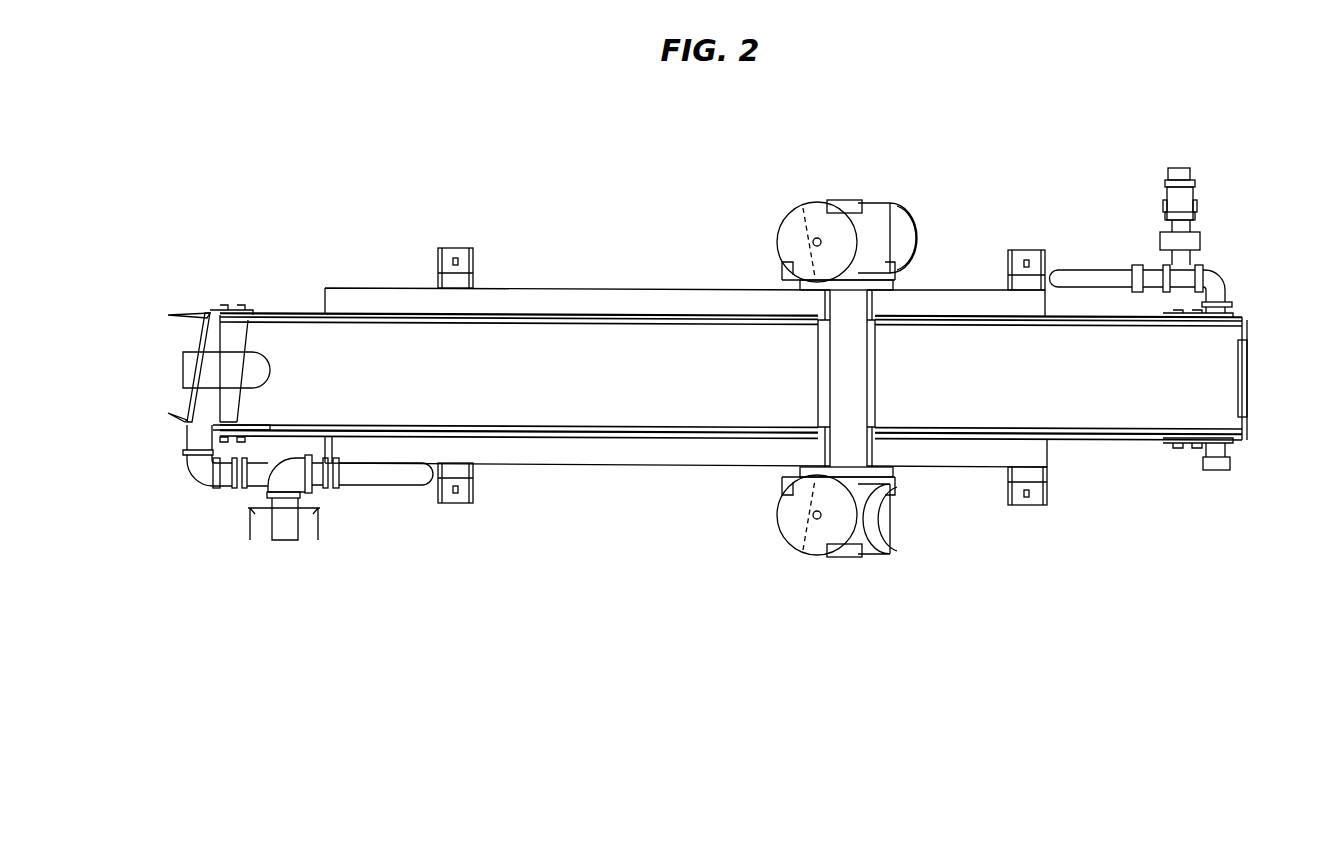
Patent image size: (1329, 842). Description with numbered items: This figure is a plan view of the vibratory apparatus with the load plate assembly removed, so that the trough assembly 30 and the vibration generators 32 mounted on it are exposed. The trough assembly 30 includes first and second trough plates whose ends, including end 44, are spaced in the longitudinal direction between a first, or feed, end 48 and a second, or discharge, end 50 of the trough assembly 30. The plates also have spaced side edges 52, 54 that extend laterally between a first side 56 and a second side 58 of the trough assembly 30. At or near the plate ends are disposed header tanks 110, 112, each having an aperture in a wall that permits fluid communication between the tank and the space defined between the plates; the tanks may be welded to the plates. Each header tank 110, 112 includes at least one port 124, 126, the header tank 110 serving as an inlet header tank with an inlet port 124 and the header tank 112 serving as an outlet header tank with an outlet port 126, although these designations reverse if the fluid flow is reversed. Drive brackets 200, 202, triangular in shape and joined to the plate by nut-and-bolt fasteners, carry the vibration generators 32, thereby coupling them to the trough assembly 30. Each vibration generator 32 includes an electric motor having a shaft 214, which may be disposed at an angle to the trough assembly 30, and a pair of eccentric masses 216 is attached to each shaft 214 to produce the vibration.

The trough assembly 30 is at (1230, 333).
The vibration generator 32 is at (870, 204).
The end 44 is at (218, 340).
The first end 48 is at (262, 297).
The second end 50 is at (1150, 245).
The side edge 52 is at (565, 437).
The side edge 54 is at (568, 313).
The first side 56 is at (635, 464).
The second side 58 is at (673, 285).
The header tank 110 is at (1233, 442).
The header tank 112 is at (205, 398).
The inlet port 124 is at (1222, 305).
The outlet port 126 is at (188, 446).
The drive bracket 200 is at (968, 464).
The drive bracket 202 is at (950, 297).
The shaft 214 is at (817, 236).
The eccentric masses 216 is at (794, 240).